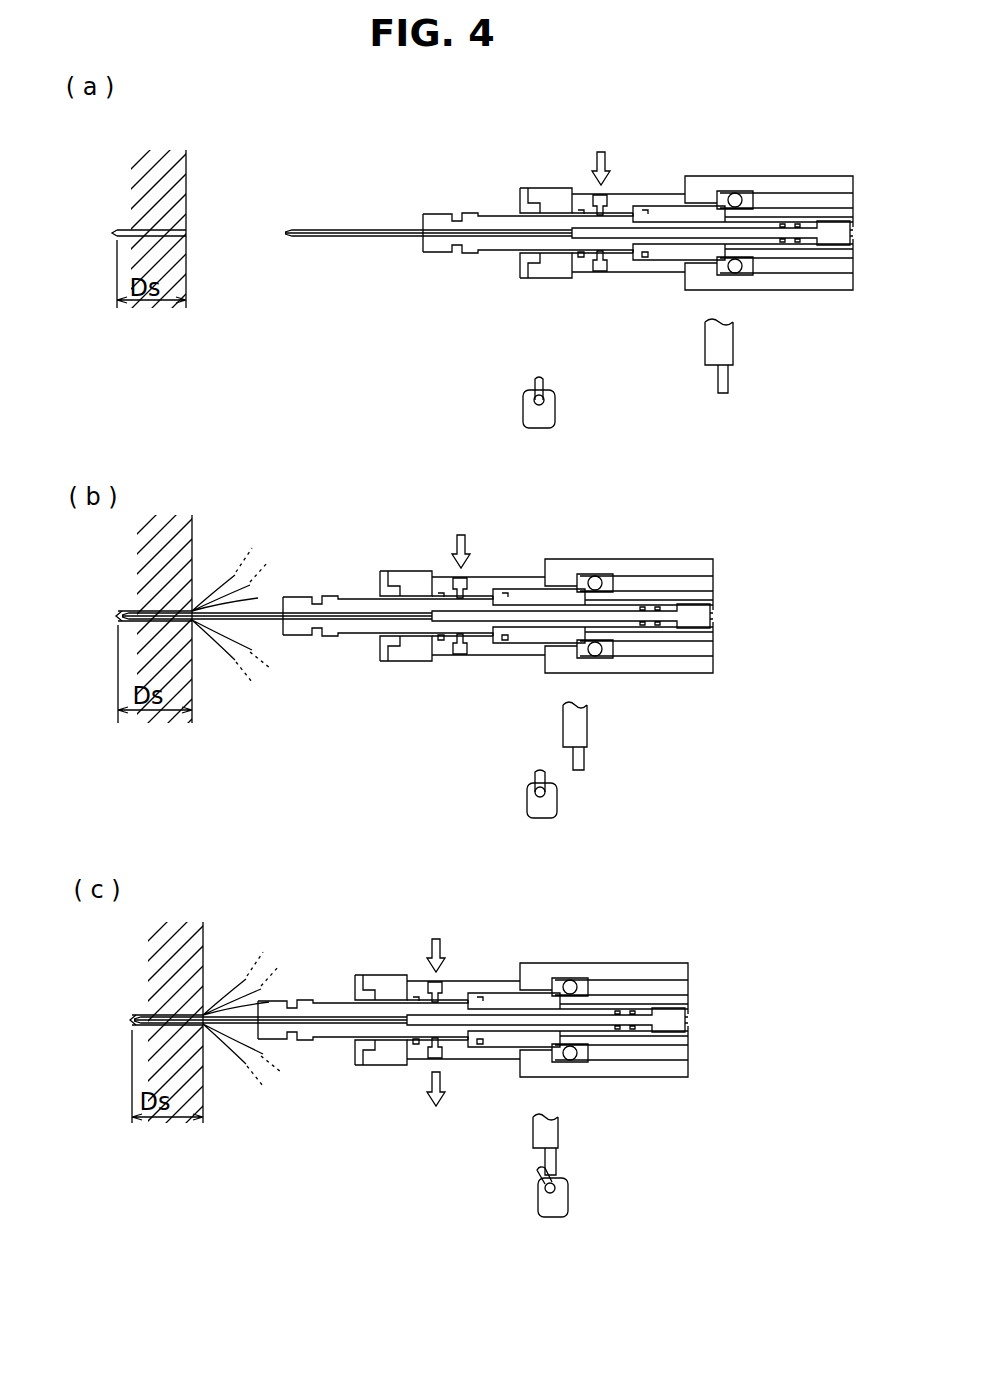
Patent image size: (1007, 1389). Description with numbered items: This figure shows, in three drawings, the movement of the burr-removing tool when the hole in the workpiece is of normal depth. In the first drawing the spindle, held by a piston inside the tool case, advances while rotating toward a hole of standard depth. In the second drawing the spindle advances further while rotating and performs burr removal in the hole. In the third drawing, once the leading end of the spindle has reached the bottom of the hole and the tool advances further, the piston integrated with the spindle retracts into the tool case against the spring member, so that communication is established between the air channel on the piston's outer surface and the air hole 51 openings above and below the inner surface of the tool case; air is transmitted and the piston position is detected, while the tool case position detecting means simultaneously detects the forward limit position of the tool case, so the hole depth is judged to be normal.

The engagement key 51 is at (463, 655).